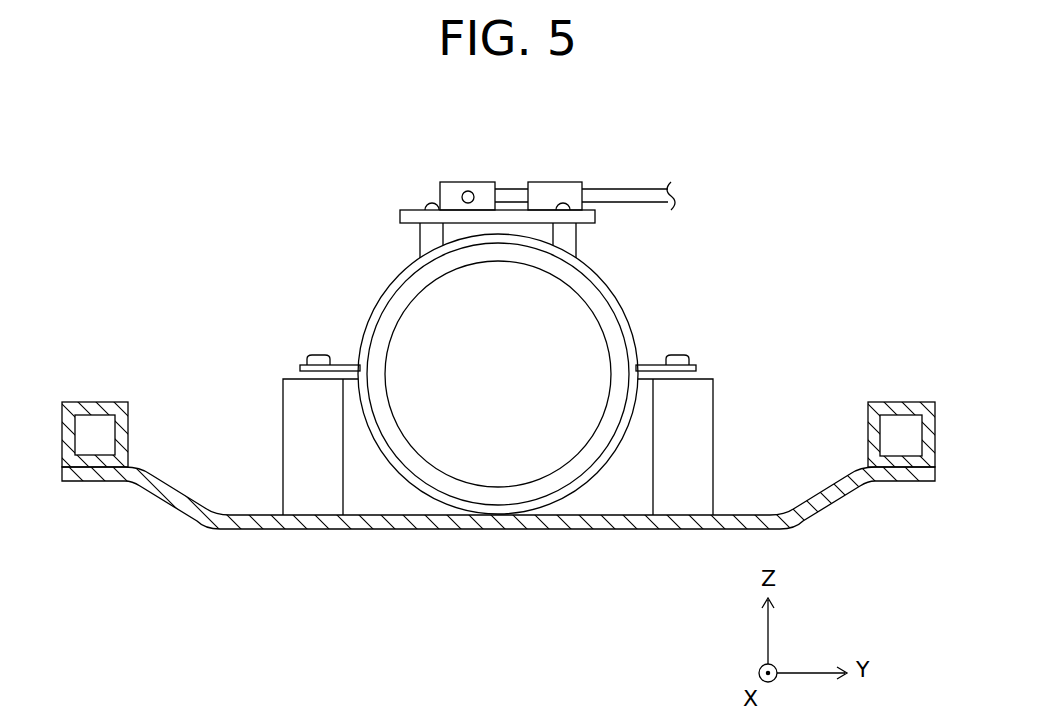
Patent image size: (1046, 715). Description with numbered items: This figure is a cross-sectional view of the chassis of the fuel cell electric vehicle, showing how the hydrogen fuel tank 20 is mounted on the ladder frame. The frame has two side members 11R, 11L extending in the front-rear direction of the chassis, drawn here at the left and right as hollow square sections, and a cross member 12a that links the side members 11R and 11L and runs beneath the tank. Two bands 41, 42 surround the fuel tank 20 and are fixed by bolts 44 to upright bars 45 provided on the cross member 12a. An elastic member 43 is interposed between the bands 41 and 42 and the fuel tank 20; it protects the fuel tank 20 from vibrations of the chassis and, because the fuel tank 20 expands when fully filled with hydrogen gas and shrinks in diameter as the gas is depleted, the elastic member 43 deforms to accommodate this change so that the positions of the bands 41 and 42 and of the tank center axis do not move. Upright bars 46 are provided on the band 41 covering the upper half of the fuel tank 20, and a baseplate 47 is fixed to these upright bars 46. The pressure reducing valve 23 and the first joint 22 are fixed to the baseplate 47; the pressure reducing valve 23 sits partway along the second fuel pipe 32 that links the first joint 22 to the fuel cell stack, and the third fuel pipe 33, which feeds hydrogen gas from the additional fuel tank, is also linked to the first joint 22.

The side member 11R is at (95, 402).
The side member 11L is at (898, 402).
The cross member 12a is at (222, 530).
The fuel tank 20 is at (498, 467).
The first joint 22 is at (557, 181).
The pressure reducing valve 23 is at (468, 181).
The second fuel pipe 32 is at (512, 188).
The third fuel pipe 33 is at (638, 188).
The band 41 is at (610, 287).
The band 42 is at (593, 468).
The elastic member 43 is at (390, 312).
The bolt 44 is at (307, 358).
The upright bar 45 is at (282, 447).
The upright bar 46 is at (420, 240).
The baseplate 47 is at (408, 210).